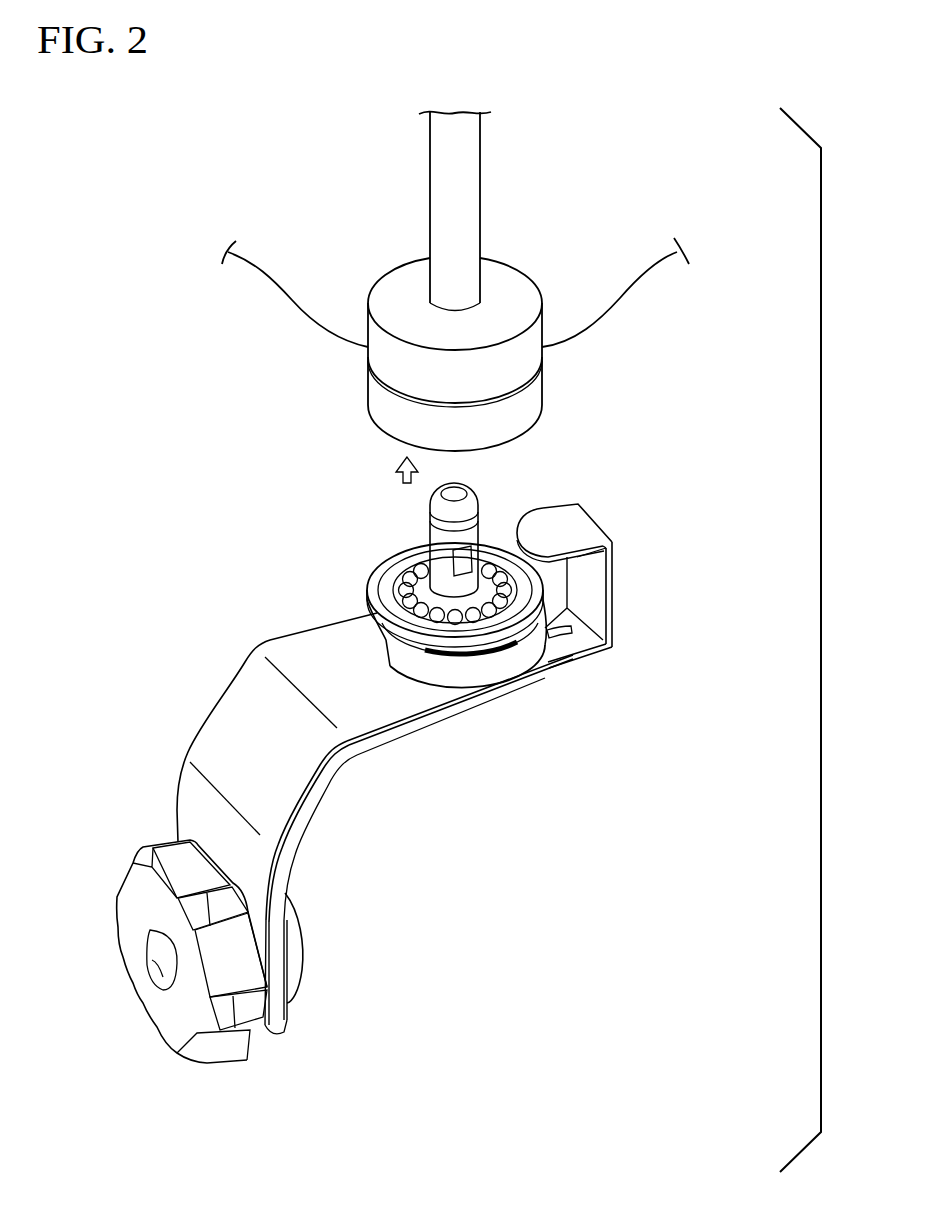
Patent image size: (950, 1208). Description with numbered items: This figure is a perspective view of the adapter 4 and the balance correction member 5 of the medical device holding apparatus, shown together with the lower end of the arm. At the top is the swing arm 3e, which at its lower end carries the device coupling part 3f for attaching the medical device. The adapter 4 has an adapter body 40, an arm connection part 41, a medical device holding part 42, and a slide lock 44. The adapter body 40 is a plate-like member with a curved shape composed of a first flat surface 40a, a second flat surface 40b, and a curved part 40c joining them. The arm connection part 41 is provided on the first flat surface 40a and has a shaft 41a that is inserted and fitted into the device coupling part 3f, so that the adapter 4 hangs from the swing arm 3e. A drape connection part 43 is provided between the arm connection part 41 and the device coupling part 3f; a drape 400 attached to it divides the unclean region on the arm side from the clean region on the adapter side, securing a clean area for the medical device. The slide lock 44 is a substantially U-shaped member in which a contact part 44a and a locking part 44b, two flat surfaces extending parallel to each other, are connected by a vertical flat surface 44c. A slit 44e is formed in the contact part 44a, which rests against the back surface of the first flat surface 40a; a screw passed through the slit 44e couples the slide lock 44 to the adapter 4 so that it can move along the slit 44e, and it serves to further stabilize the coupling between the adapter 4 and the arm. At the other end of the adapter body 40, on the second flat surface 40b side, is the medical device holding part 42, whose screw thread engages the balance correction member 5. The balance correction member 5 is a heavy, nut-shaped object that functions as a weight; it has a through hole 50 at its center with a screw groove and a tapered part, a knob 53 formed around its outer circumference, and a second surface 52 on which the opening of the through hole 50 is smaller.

The swing arm 3e is at (470, 157).
The device coupling part 3f is at (522, 348).
The drape connection part 43 is at (523, 400).
The drape 400 is at (273, 280).
The shaft 41a is at (431, 531).
The arm connection part 41 is at (503, 633).
The slide lock 44 is at (607, 589).
The locking part 44b is at (552, 527).
The vertical flat surface 44c is at (612, 568).
The contact part 44a is at (588, 660).
The slit 44e is at (572, 616).
The adapter body 40 is at (375, 848).
The first flat surface 40a is at (490, 717).
The curved part 40c is at (325, 793).
The second flat surface 40b is at (283, 1013).
The medical device holding part 42 is at (303, 943).
The adapter 4 is at (213, 678).
The balance correction member 5 is at (152, 969).
The second surface 52 is at (137, 912).
The knob 53 is at (170, 863).
The through hole 50 is at (163, 963).